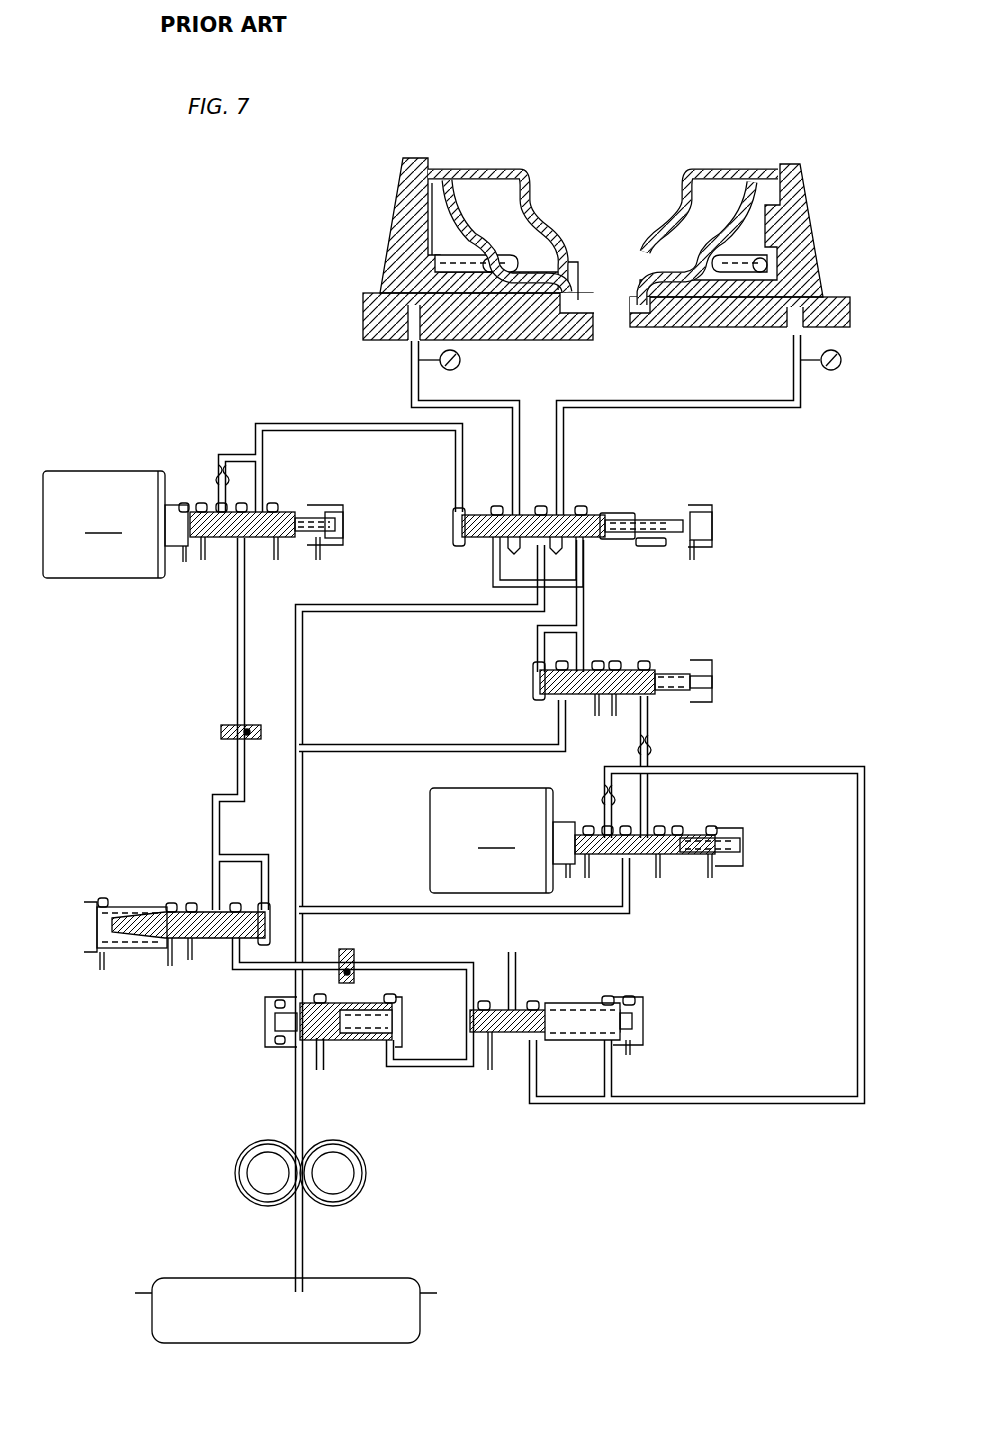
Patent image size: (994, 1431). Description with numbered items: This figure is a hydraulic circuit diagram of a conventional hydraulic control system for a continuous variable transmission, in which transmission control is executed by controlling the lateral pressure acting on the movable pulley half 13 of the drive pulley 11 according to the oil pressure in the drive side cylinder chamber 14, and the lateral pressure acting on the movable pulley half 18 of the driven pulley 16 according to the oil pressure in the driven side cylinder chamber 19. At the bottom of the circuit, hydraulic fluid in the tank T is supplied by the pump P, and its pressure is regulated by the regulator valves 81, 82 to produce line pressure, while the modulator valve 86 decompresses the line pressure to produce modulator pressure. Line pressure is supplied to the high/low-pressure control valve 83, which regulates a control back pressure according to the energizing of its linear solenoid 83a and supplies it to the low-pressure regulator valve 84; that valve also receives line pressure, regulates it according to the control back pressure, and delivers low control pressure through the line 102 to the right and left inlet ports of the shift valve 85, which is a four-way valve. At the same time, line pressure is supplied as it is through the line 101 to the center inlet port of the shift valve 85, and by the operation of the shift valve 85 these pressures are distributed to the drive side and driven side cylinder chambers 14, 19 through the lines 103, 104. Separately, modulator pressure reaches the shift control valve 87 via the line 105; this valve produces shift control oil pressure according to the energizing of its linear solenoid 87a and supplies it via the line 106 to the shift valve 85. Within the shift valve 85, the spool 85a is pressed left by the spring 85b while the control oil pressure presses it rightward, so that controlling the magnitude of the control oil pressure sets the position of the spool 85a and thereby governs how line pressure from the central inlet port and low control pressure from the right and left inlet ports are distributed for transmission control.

The drive pulley 11 is at (759, 201).
The movable pulley half 13 is at (808, 212).
The drive side cylinder chamber 14 is at (790, 236).
The driven pulley 16 is at (463, 216).
The movable pulley half 18 is at (405, 237).
The driven side cylinder chamber 19 is at (452, 232).
The regulator valve 81 is at (345, 1068).
The regulator valve 82 is at (518, 1068).
The high/low-pressure control valve 83 is at (698, 888).
The linear solenoid 83a is at (491, 840).
The low-pressure regulator valve 84 is at (674, 660).
The shift valve 85 is at (622, 527).
The spool 85a is at (598, 512).
The spring 85b is at (648, 548).
The modulator valve 86 is at (205, 968).
The shift control valve 87 is at (292, 497).
The linear solenoid 87a is at (104, 524).
The line 101 is at (528, 578).
The line 102 is at (588, 632).
The line 103 is at (652, 405).
The line 104 is at (512, 405).
The line 105 is at (237, 705).
The line 106 is at (320, 425).
The pump P is at (368, 1172).
The tank T is at (430, 1293).